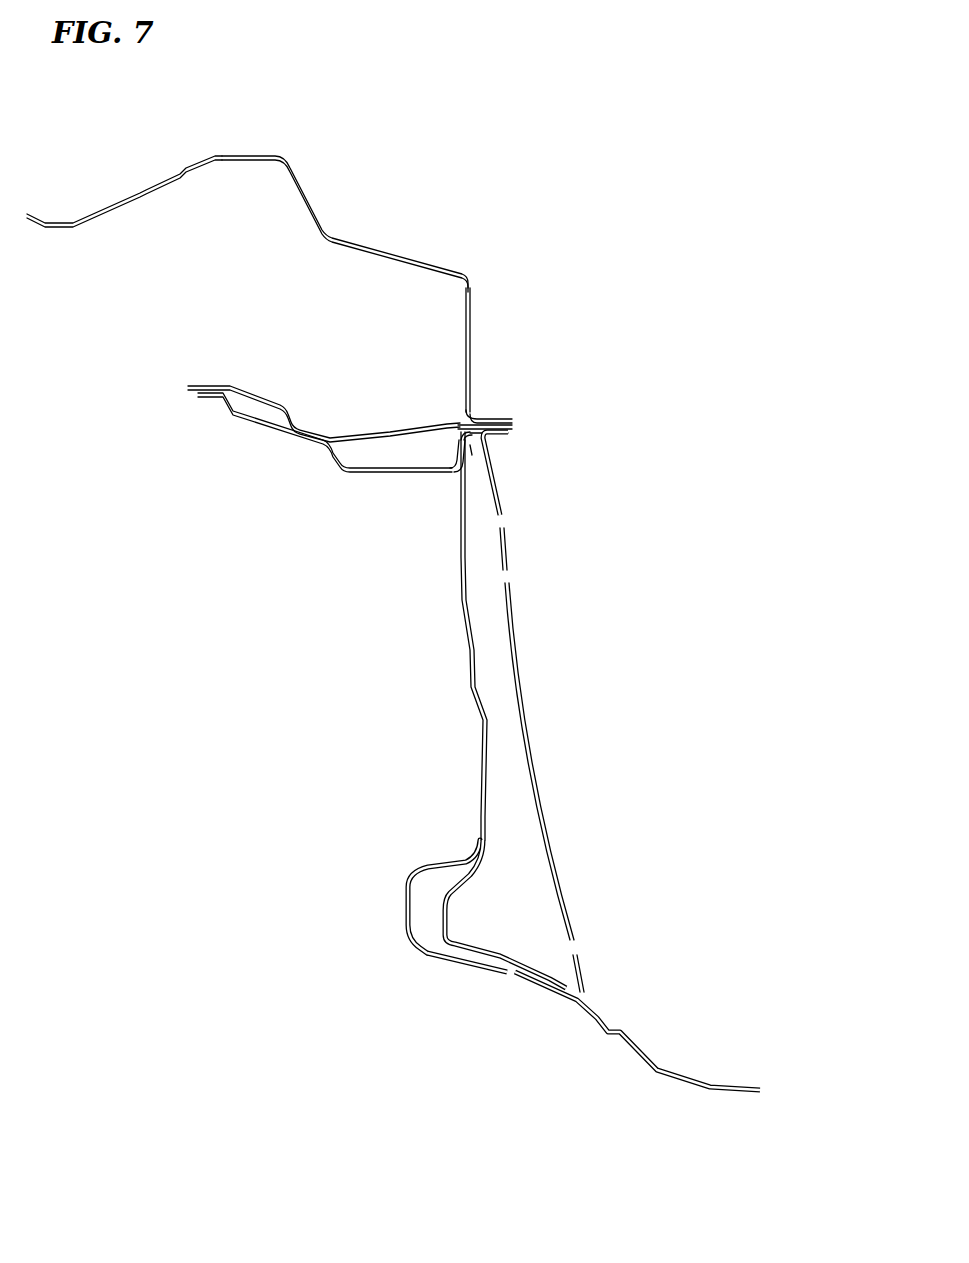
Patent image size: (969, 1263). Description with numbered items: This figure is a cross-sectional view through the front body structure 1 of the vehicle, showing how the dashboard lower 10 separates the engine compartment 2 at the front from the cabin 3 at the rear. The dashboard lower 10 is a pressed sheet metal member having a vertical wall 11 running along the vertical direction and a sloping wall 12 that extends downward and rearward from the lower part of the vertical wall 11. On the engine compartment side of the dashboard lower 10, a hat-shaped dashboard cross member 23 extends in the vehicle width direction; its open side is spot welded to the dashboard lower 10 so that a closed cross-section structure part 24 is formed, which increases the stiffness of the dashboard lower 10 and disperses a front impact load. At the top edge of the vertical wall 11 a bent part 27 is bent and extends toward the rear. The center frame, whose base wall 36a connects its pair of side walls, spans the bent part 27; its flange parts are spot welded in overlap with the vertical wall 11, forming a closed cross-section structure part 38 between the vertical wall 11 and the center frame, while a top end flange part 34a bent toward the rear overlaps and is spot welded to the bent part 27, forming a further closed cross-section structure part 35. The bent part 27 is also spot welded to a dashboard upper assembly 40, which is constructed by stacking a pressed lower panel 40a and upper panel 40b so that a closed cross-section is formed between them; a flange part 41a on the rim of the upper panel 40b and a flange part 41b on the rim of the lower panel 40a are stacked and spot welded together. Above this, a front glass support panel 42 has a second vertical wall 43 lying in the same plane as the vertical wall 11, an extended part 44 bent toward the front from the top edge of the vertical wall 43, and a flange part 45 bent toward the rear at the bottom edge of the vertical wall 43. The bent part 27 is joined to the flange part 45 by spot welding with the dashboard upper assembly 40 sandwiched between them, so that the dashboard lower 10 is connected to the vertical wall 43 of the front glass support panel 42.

The vehicle door structure 1 is at (668, 282).
The engine compartment 2 is at (277, 707).
The cabin 3 is at (777, 777).
The dashboard lower 10 is at (464, 710).
The vertical wall 11 is at (472, 672).
The sloping wall 12 is at (635, 1047).
The dashboard cross member 23 is at (403, 923).
The closed cross-section structure part 24 is at (462, 952).
The bent part 27 is at (513, 437).
The top end flange part 34a is at (495, 442).
The closed cross-section structure part 35 is at (474, 443).
The base wall 36a is at (593, 760).
The closed cross-section structure part 38 is at (523, 820).
The dashboard upper assembly 40 is at (281, 457).
The lower panel 40a is at (370, 472).
The upper panel 40b is at (405, 428).
The flange part 41a is at (517, 424).
The flange part 41b is at (517, 430).
The front glass support panel 42 is at (357, 230).
The vertical wall 43 is at (472, 340).
The extended part 44 is at (155, 186).
The flange part 45 is at (492, 420).